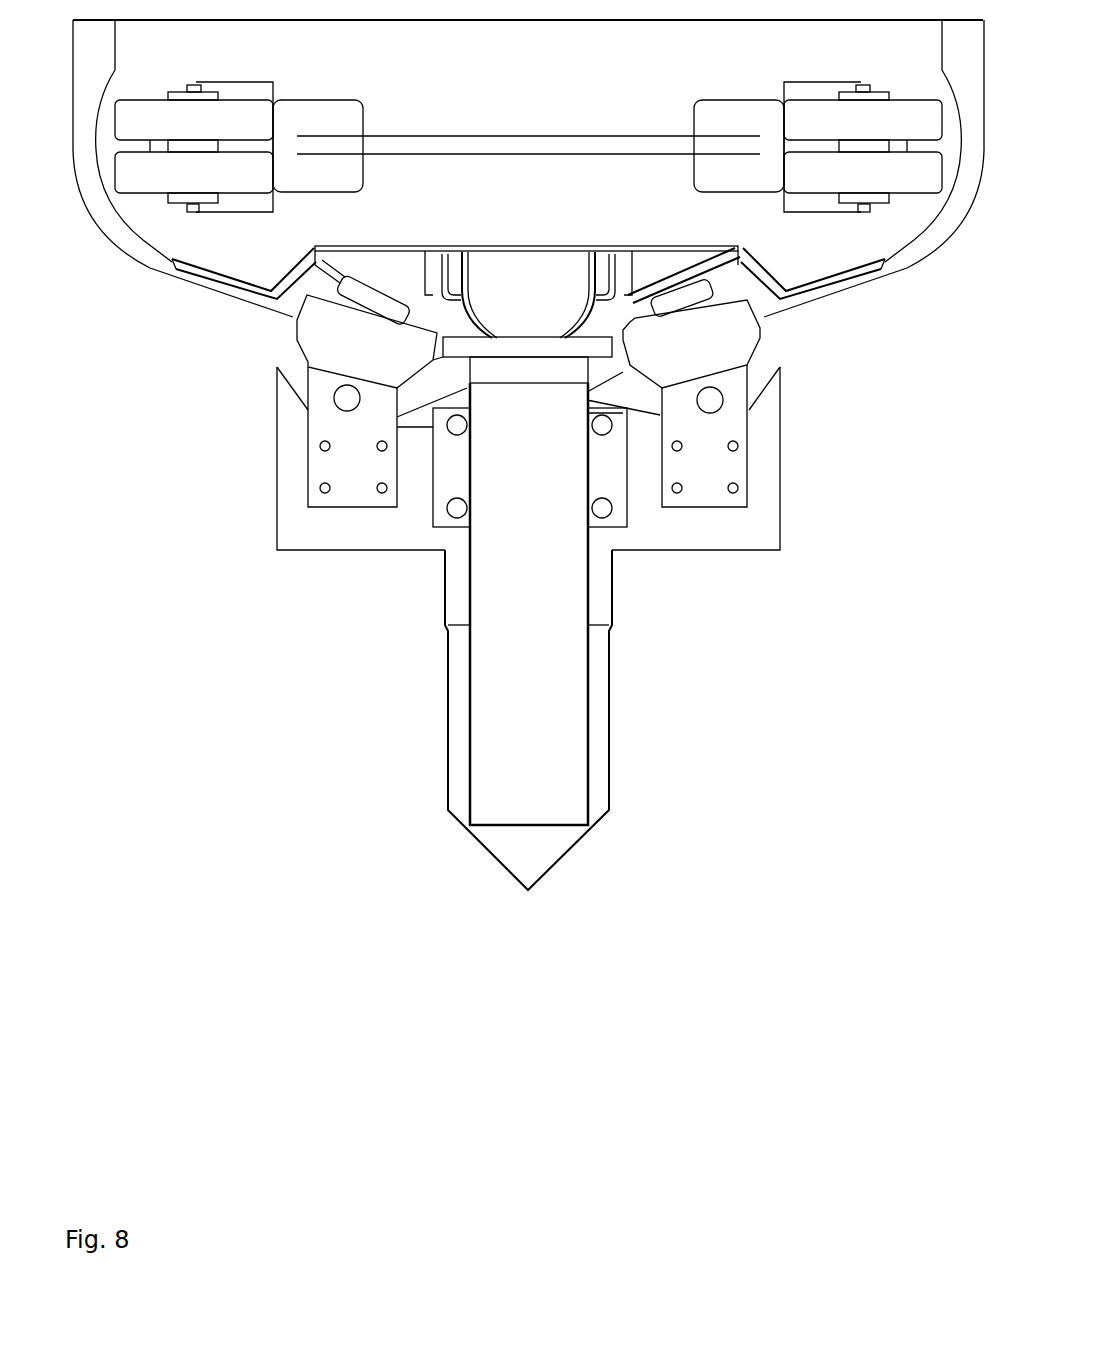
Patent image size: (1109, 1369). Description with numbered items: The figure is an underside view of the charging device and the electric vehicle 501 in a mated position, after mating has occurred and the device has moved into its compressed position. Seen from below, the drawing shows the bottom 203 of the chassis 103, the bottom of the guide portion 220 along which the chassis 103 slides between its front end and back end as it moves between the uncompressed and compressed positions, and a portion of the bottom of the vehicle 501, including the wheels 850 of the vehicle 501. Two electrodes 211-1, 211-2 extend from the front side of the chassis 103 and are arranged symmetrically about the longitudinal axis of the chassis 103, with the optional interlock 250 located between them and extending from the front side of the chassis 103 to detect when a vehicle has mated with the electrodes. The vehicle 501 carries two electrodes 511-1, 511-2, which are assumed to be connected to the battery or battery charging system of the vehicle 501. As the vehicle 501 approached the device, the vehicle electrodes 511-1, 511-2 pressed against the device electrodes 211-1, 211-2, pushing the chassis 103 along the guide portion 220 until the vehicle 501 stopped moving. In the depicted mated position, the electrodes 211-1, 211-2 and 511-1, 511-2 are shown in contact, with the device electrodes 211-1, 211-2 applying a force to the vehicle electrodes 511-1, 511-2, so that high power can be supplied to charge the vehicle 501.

The chassis 103 is at (416, 556).
The bottom 203 is at (390, 545).
The electrode 211-1 is at (723, 365).
The electrode 211-2 is at (390, 357).
The guide portion 220 is at (543, 598).
The interlock 250 is at (543, 380).
The vehicle 501 is at (541, 95).
The electrode 511-1 is at (740, 252).
The electrode 511-2 is at (318, 268).
The wheels 850 is at (168, 205).